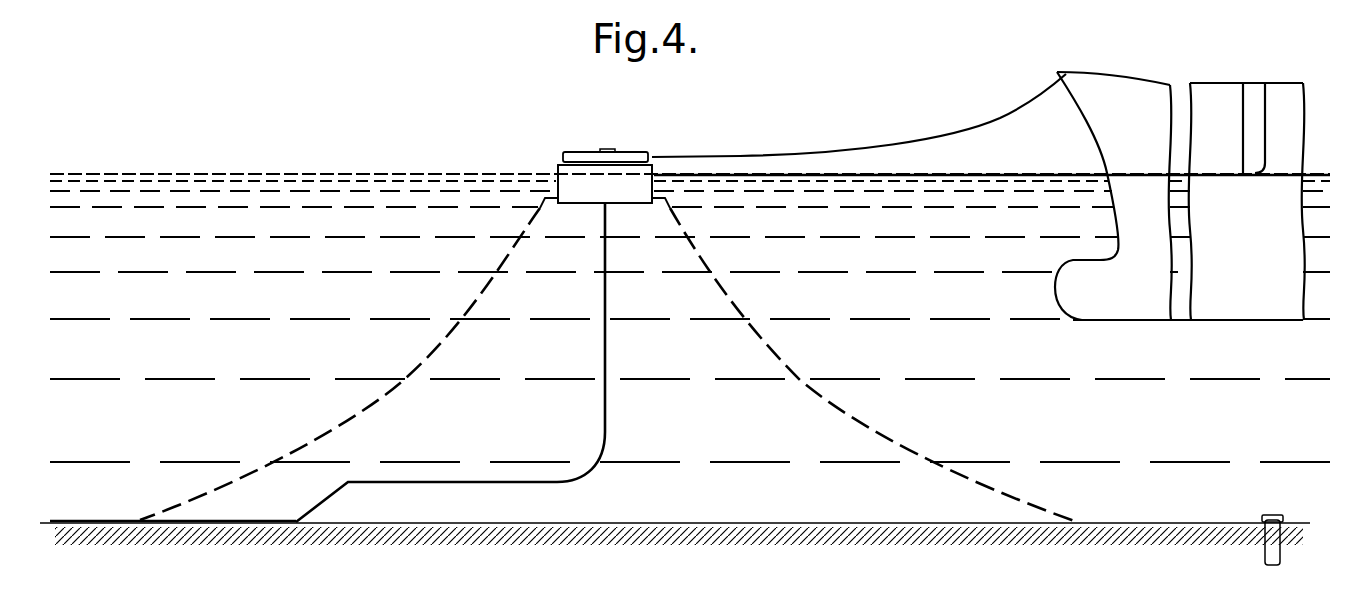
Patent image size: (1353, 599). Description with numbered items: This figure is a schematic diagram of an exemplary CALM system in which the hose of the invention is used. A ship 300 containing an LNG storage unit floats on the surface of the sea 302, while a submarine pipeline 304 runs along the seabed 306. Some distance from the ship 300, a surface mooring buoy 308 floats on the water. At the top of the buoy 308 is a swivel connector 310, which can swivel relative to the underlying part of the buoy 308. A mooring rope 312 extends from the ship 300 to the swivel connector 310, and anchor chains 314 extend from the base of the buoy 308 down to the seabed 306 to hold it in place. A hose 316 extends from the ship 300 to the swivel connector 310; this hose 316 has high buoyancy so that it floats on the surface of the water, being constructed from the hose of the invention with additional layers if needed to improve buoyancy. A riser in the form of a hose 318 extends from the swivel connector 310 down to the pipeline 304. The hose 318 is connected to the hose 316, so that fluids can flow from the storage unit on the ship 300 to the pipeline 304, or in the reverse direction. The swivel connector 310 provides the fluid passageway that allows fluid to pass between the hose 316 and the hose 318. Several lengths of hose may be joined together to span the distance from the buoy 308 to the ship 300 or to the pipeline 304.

The ship 300 is at (1055, 298).
The sea 302 is at (175, 172).
The submarine pipeline 304 is at (122, 520).
The seabed 306 is at (865, 522).
The surface mooring buoy 308 is at (626, 204).
The swivel connector 310 is at (600, 150).
The mooring rope 312 is at (828, 138).
The anchor chains 314 is at (425, 360).
The hose 316 is at (605, 415).
The hose 318 is at (963, 175).